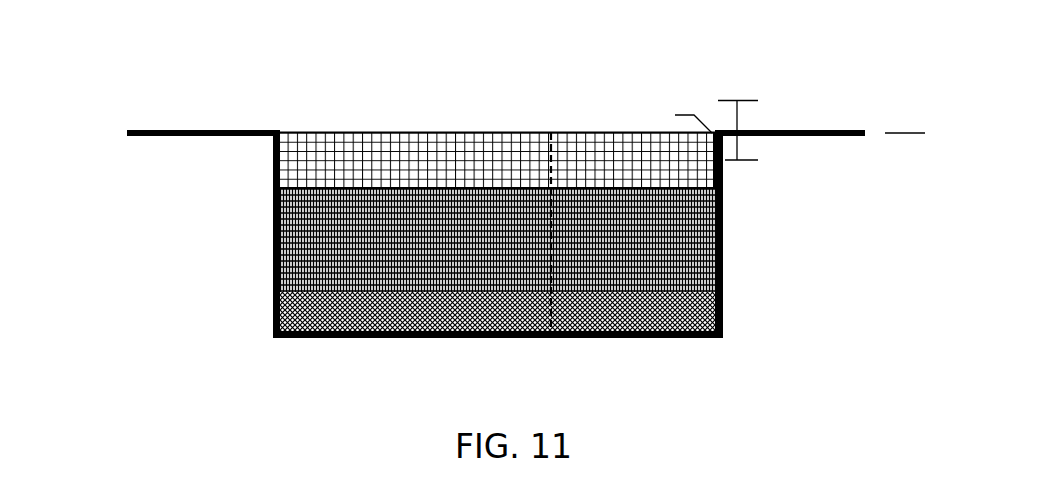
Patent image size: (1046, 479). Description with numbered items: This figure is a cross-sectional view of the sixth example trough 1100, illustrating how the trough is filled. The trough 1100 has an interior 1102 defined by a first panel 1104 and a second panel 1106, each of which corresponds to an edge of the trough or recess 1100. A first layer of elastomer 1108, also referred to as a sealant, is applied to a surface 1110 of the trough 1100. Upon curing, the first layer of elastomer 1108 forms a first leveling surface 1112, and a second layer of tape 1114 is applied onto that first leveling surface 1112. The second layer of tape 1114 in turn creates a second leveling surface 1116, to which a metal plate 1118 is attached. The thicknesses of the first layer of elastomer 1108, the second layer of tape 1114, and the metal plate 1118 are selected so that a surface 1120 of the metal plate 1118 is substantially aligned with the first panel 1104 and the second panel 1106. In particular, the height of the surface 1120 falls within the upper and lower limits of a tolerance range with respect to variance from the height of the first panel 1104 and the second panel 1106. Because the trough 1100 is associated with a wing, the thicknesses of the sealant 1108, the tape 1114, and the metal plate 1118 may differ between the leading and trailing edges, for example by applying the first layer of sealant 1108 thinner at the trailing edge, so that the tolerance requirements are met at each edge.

The sixth example trough 1100 is at (158, 75).
The interior 1102 is at (450, 110).
The first panel 1104 is at (170, 130).
The second panel 1106 is at (810, 130).
The first layer of elastomer 1108 is at (277, 315).
The surface 1110 is at (607, 340).
The first leveling surface 1112 is at (280, 280).
The second layer of tape 1114 is at (283, 232).
The second leveling surface 1116 is at (292, 182).
The metal plate 1118 is at (387, 143).
The surface 1120 is at (632, 133).